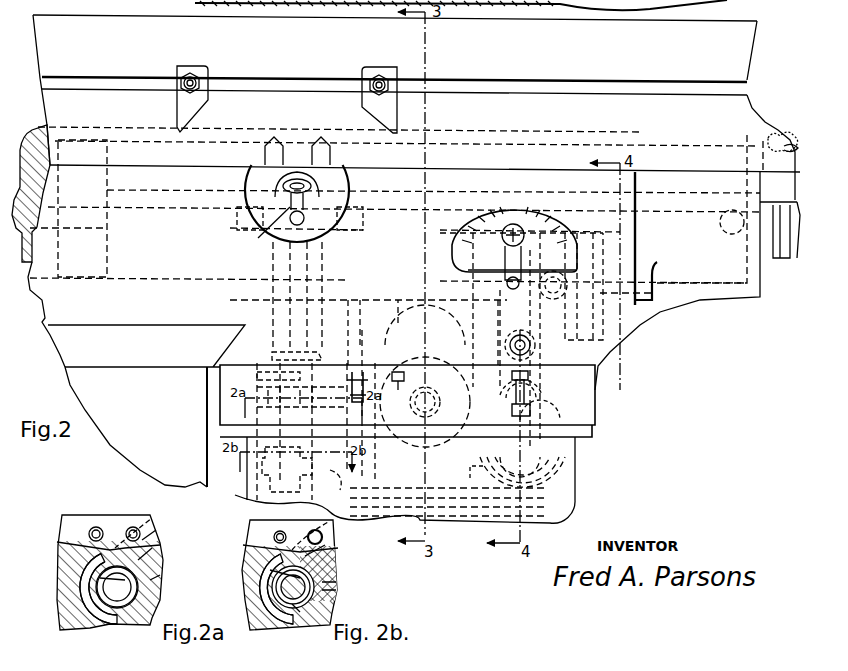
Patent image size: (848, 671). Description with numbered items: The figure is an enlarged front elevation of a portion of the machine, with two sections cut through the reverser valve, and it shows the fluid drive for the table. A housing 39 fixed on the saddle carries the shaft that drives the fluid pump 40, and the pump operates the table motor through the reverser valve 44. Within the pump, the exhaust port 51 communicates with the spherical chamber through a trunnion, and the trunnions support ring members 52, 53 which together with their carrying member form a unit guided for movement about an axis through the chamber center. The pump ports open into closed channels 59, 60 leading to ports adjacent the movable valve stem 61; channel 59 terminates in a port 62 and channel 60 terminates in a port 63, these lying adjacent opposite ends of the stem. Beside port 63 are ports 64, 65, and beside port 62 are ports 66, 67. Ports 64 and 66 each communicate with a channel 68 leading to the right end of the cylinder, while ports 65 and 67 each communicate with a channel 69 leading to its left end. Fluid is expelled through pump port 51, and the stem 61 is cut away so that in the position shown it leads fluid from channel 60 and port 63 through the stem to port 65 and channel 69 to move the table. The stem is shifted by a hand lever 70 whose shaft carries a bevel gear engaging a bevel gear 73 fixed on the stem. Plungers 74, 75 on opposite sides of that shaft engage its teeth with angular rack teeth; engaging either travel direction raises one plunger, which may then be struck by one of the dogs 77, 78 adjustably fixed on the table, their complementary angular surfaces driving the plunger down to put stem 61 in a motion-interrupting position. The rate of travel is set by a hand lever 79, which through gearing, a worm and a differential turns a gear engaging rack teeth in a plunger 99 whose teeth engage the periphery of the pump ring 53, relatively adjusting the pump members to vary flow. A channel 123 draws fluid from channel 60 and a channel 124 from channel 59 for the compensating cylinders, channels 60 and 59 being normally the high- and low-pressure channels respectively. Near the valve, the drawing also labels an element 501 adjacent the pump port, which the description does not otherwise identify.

In FIG. 2, the housing 39 is at (597, 411).
In FIG. 2, the fluid pump 40 is at (425, 410).
In FIG. 2, the reverser valve 44 is at (280, 468).
In FIG. 2, the exhaust port 51 is at (356, 376).
In FIG. 2, the ring member 52 is at (385, 330).
In FIG. 2, the pump ring 53 is at (475, 470).
In FIG. 2, the channel 59 is at (530, 376).
In FIG. 2B, the channel 59 is at (328, 589).
In FIG. 2, the channel 60 is at (301, 391).
In FIG. 2A, the channel 60 is at (152, 560).
In FIG. 2, the valve stem 61 is at (283, 386).
In FIG. 2A, the valve stem 61 is at (100, 578).
In FIG. 2B, the valve stem 61 is at (290, 580).
In FIG. 2B, the port 62 is at (322, 570).
In FIG. 2A, the port 63 is at (150, 550).
In FIG. 2A, the port 64 is at (150, 538).
In FIG. 2A, the port 65 is at (120, 620).
In FIG. 2B, the port 66 is at (322, 558).
In FIG. 2B, the port 67 is at (296, 622).
In FIG. 2, the channel 68 is at (398, 228).
In FIG. 2A, the channel 68 is at (134, 526).
In FIG. 2B, the channel 68 is at (312, 530).
In FIG. 2, the channel 69 is at (128, 222).
In FIG. 2A, the channel 69 is at (97, 526).
In FIG. 2B, the channel 69 is at (278, 531).
In FIG. 2, the hand lever 70 is at (265, 237).
In FIG. 2, the bevel gear 73 is at (272, 355).
In FIG. 2, the plunger 74 is at (330, 153).
In FIG. 2, the plunger 75 is at (265, 152).
In FIG. 2, the dog 77 is at (397, 72).
In FIG. 2, the dog 78 is at (219, 60).
In FIG. 2, the hand lever 79 is at (508, 252).
In FIG. 2, the plunger 99 is at (477, 302).
In FIG. 2, the channel 123 is at (398, 372).
In FIG. 2, the channel 124 is at (552, 405).
In FIG. 2, the bolt 501 is at (510, 350).